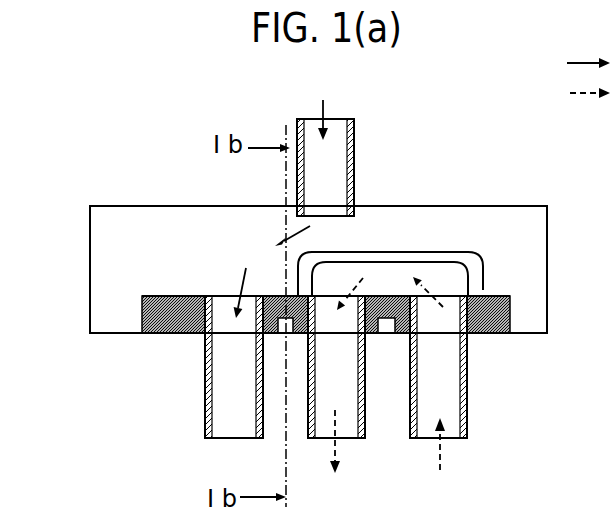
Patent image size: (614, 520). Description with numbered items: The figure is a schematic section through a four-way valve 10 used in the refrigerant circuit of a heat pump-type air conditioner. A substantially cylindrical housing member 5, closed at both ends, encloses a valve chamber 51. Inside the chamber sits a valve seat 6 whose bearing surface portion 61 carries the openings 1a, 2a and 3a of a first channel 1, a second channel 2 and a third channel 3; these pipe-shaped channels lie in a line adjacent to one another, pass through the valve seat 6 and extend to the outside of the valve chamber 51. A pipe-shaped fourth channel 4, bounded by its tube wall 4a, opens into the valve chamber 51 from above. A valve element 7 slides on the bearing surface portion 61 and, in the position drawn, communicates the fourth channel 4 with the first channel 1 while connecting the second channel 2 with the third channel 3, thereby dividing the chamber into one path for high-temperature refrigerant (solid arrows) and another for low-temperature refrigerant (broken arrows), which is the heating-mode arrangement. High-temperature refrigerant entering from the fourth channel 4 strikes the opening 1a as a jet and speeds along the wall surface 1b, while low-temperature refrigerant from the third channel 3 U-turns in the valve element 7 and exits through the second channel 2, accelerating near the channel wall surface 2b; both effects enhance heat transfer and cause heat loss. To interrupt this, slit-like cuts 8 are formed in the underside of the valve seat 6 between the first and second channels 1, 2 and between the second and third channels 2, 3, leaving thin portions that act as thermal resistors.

The four-way valve 10 is at (87, 143).
The housing member 5 is at (547, 227).
The valve chamber 51 is at (108, 232).
The bearing surface portion 61 is at (142, 300).
The valve seat 6 is at (493, 315).
The valve element 7 is at (480, 285).
The fourth channel 4 is at (361, 160).
The inlet tube wall 4a is at (340, 210).
The first channel 1 is at (212, 354).
The opening of first channel 1a is at (230, 296).
The wall surface 1b is at (262, 320).
The second channel 2 is at (389, 320).
The opening of second channel 2a is at (335, 296).
The channel wall surface 2b is at (317, 318).
The third channel 3 is at (474, 315).
The opening of third channel 3a is at (445, 296).
The slit-like cut 8 is at (258, 387).